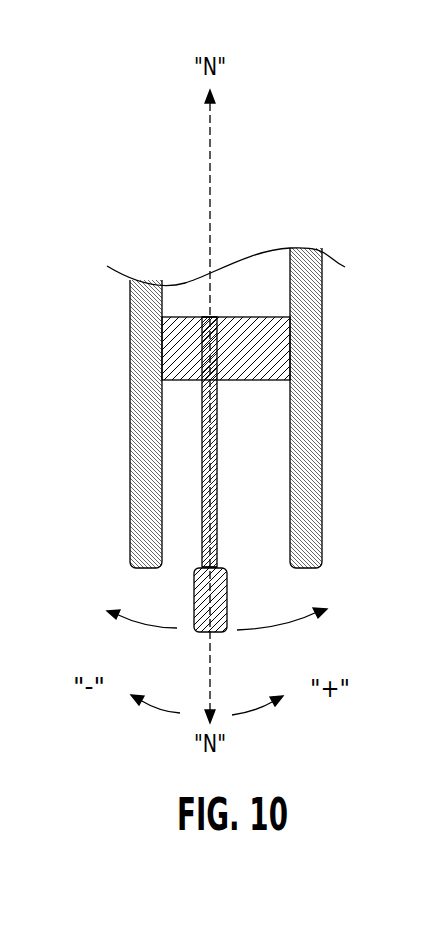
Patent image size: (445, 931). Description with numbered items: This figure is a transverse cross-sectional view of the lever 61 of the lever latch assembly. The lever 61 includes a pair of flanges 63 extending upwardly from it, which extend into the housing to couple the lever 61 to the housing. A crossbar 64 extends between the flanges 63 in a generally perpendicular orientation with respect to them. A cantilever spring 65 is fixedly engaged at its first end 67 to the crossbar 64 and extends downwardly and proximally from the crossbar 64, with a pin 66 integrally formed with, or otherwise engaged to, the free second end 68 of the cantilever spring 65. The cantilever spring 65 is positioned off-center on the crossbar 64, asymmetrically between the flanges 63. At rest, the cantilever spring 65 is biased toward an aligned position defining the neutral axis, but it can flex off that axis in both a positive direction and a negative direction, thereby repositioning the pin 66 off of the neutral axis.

The lever 61 is at (225, 405).
The flanges 63 is at (145, 507).
The crossbar 64 is at (172, 348).
The cantilever spring 65 is at (213, 455).
The pin 66 is at (217, 622).
The first end 67 is at (210, 337).
The free second end 68 is at (217, 563).